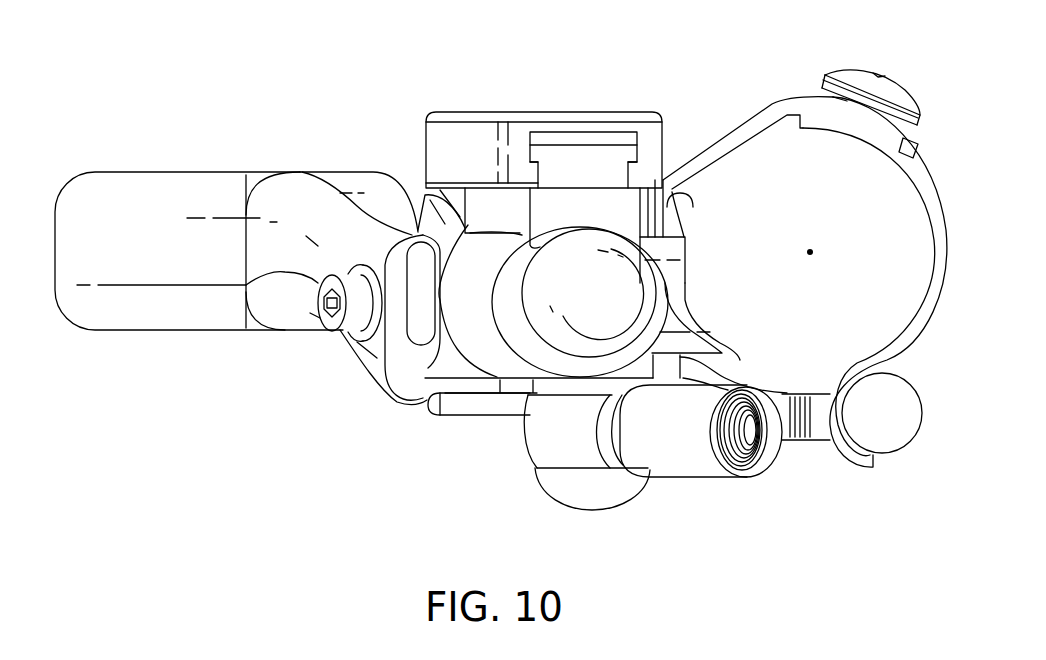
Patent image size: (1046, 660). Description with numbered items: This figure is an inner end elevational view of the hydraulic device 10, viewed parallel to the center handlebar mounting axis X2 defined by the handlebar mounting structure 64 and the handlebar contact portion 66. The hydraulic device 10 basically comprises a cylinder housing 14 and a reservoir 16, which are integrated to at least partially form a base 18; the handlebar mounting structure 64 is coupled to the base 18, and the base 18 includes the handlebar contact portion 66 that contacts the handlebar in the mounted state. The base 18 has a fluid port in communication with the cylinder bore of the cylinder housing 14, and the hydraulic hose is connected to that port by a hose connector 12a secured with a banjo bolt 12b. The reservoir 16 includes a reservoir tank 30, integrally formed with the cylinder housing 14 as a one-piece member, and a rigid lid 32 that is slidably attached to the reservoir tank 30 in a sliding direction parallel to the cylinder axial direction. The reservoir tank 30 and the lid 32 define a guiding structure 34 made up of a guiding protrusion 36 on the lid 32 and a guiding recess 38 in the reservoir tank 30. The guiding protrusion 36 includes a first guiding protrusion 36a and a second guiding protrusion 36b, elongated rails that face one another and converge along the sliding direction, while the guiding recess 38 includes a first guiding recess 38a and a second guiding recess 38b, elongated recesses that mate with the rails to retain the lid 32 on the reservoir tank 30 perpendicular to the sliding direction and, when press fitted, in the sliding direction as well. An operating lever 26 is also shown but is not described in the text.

The hydraulic device 10 is at (184, 94).
The hose connector 12a is at (696, 478).
The banjo bolt 12b is at (592, 512).
The cylinder housing 14 is at (497, 347).
The reservoir 16 is at (342, 108).
The base 18 is at (670, 378).
The operating lever 26 is at (137, 335).
The reservoir tank 30 is at (427, 200).
The lid 32 is at (428, 132).
The guiding structure 34 is at (686, 149).
The guiding protrusion 36 is at (678, 182).
The first guiding protrusion 36a is at (527, 180).
The second guiding protrusion 36b is at (680, 200).
The guiding recess 38 is at (650, 148).
The first guiding recess 38a is at (530, 162).
The second guiding recess 38b is at (674, 158).
The handlebar mounting structure 64 is at (770, 95).
The handlebar contact portion 66 is at (707, 326).
The center handlebar mounting axis X2 is at (812, 249).